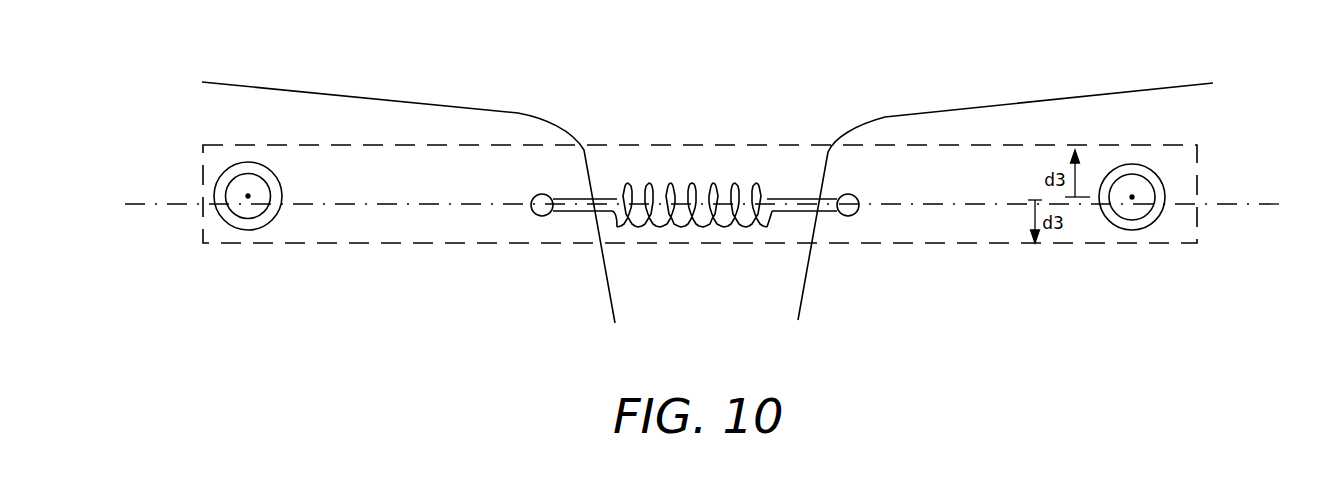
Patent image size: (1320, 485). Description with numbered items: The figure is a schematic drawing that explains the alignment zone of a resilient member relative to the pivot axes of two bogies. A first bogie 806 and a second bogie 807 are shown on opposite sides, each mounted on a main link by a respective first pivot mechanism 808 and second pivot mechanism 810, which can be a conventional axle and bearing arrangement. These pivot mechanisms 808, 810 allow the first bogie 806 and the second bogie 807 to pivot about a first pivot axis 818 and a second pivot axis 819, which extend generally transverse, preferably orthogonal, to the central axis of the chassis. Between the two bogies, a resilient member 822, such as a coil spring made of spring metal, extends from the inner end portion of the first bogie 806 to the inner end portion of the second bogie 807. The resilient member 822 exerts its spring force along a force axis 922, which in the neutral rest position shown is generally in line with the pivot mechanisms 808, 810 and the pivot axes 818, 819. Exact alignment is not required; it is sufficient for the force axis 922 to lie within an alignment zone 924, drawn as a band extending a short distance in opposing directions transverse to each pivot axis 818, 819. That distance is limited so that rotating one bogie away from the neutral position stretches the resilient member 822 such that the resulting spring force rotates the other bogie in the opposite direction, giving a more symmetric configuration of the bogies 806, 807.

The first bogie 806 is at (448, 105).
The second bogie 807 is at (960, 107).
The first pivot mechanism 808 is at (284, 162).
The second pivot mechanism 810 is at (1164, 161).
The first pivot axis 818 is at (248, 200).
The second pivot axis 819 is at (1133, 200).
The resilient member 822 is at (739, 240).
The force axis 922 is at (1265, 205).
The alignment zone 924 is at (725, 150).